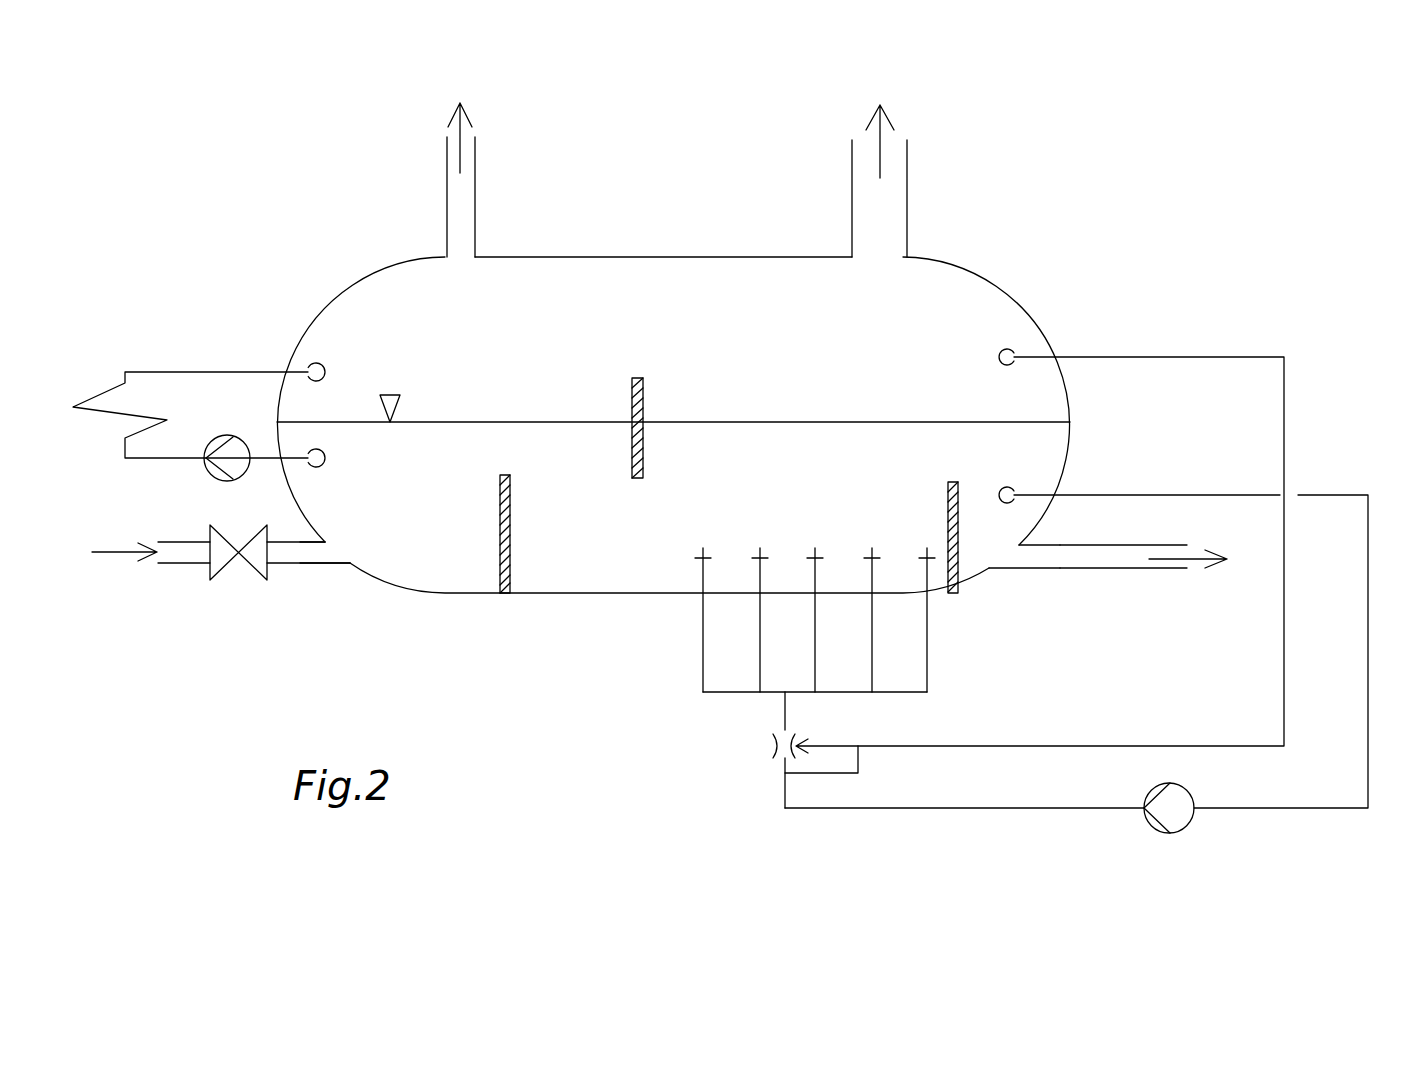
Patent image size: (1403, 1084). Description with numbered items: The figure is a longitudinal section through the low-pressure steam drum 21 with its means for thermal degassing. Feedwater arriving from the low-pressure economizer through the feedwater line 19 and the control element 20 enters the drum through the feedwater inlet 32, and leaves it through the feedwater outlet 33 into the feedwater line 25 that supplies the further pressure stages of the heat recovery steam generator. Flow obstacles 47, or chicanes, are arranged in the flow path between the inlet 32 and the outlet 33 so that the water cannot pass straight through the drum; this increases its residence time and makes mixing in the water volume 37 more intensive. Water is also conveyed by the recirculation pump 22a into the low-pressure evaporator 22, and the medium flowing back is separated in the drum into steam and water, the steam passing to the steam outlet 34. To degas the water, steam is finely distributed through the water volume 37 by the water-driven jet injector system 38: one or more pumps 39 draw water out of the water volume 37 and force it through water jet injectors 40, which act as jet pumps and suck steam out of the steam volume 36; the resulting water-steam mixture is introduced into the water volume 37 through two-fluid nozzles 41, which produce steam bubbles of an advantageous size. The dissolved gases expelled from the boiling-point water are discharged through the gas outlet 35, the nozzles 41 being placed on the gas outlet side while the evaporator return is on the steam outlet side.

The feedwater line 19 is at (177, 538).
The control element 20 is at (250, 537).
The low-pressure steam drum 21 is at (1000, 287).
The low-pressure evaporator 22 is at (132, 396).
The recirculation pump 22a is at (233, 430).
The feedwater line 25 is at (1067, 541).
The feedwater inlet 32 is at (340, 544).
The feedwater outlet 33 is at (1017, 550).
The steam outlet 34 is at (465, 211).
The gas outlet 35 is at (890, 205).
The steam volume 36 is at (682, 357).
The water volume 37 is at (699, 535).
The water-driven jet injector system 38 is at (982, 884).
The pump 39 is at (1169, 837).
The water jet injector 40 is at (768, 743).
The two-fluid nozzle 41 is at (820, 540).
The flow obstacle 47 is at (513, 487).